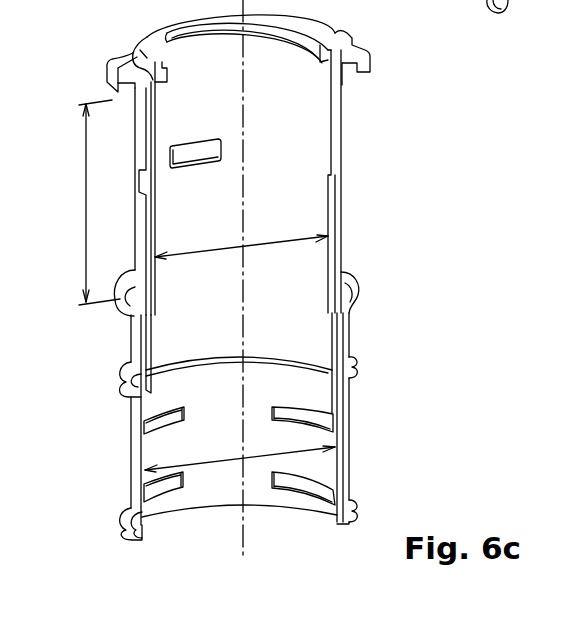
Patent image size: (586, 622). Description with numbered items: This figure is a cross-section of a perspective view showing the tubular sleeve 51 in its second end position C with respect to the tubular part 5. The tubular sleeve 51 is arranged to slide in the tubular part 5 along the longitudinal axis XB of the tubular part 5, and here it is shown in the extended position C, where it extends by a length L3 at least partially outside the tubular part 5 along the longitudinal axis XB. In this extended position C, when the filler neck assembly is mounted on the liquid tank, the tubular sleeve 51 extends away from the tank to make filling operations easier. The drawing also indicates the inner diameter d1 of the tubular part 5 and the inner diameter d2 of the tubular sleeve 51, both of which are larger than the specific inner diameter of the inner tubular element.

The tubular part 5 is at (135, 457).
The tubular sleeve 51 is at (292, 106).
The second end position C is at (388, 288).
The extension length L3 is at (87, 202).
The inner diameter of the tubular part d1 is at (240, 452).
The inner diameter of the tubular sleeve d2 is at (241, 239).
The longitudinal axis XB is at (585, 17).